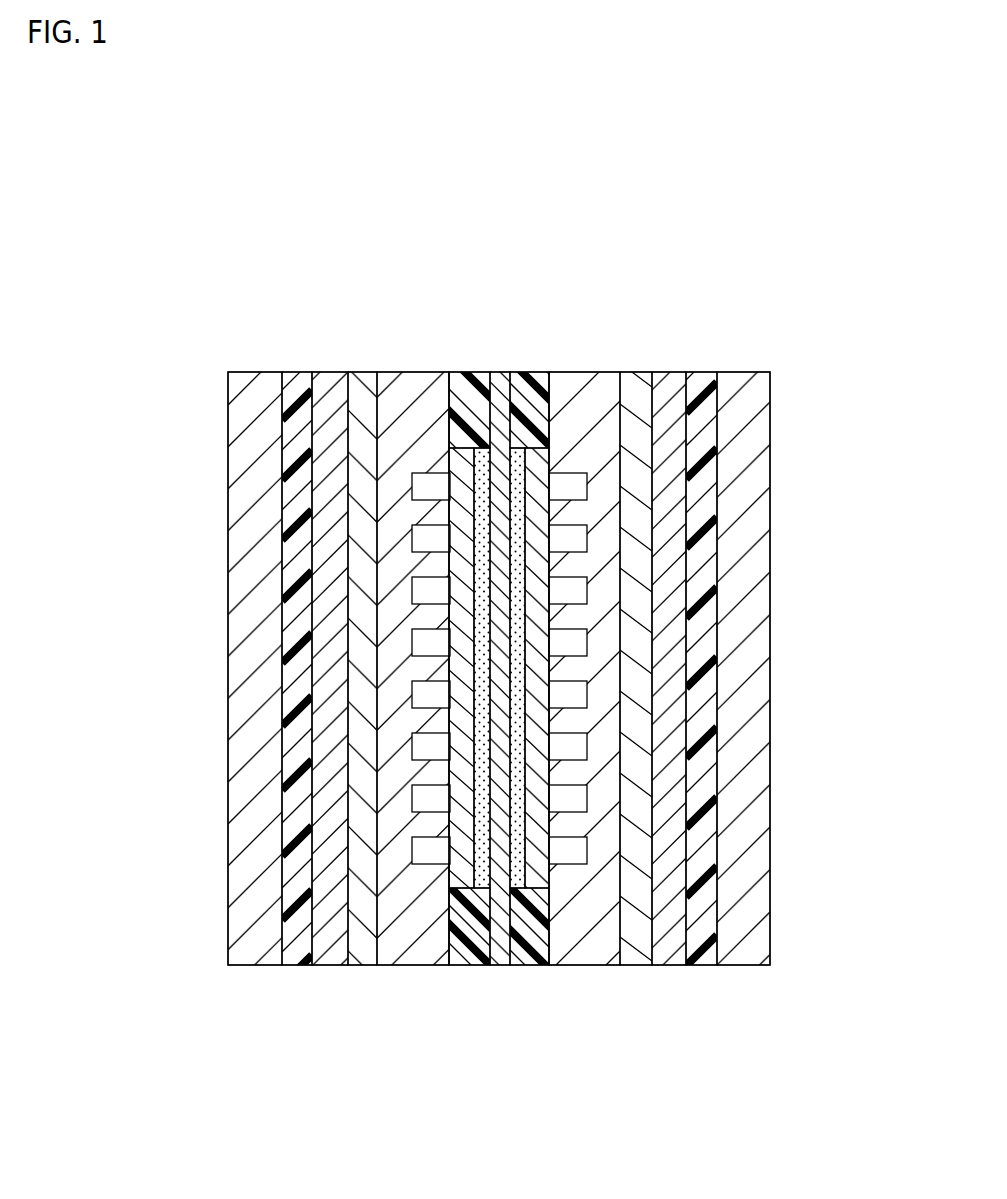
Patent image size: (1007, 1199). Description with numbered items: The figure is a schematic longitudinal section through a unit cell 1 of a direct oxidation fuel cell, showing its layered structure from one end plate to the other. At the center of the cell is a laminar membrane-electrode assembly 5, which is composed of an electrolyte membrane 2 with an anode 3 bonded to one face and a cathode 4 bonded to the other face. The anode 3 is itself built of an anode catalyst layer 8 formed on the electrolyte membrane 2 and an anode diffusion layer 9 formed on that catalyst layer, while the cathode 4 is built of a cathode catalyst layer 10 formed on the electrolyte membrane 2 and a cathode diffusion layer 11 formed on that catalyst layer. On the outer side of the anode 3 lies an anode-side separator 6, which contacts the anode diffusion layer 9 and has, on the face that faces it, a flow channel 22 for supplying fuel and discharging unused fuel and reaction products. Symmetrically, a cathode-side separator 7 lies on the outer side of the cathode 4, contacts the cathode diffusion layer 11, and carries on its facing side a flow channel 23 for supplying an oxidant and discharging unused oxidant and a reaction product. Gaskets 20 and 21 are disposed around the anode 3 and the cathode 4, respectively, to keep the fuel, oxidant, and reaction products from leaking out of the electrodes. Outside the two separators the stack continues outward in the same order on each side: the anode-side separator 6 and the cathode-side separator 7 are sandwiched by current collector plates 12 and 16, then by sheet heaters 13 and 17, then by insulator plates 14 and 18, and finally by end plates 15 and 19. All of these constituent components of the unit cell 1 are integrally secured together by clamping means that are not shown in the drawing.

The unit cell 1 is at (775, 197).
The electrolyte membrane 2 is at (497, 405).
The anode 3 is at (465, 303).
The cathode 4 is at (603, 303).
The membrane-electrode assembly 5 is at (568, 248).
The anode-side separator 6 is at (400, 403).
The cathode-side separator 7 is at (602, 403).
The anode catalyst layer 8 is at (482, 448).
The anode diffusion layer 9 is at (464, 466).
The cathode catalyst layer 10 is at (518, 460).
The cathode diffusion layer 11 is at (540, 465).
The current collector plate 12 is at (363, 447).
The sheet heater 13 is at (327, 527).
The insulator plate 14 is at (300, 602).
The end plate 15 is at (260, 680).
The current collector plate 16 is at (635, 448).
The sheet heater 17 is at (667, 530).
The insulator plate 18 is at (703, 612).
The end plate 19 is at (742, 693).
The gasket 20 is at (464, 948).
The gasket 21 is at (530, 945).
The flow channel 22 is at (430, 852).
The flow channel 23 is at (567, 852).